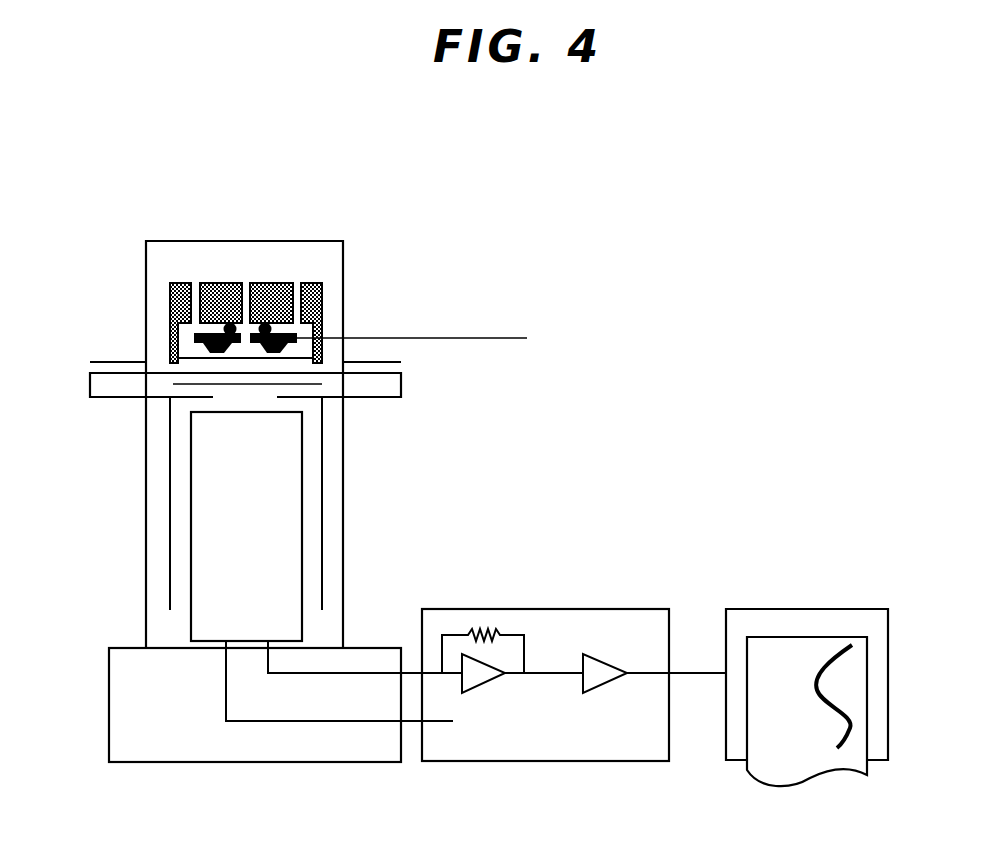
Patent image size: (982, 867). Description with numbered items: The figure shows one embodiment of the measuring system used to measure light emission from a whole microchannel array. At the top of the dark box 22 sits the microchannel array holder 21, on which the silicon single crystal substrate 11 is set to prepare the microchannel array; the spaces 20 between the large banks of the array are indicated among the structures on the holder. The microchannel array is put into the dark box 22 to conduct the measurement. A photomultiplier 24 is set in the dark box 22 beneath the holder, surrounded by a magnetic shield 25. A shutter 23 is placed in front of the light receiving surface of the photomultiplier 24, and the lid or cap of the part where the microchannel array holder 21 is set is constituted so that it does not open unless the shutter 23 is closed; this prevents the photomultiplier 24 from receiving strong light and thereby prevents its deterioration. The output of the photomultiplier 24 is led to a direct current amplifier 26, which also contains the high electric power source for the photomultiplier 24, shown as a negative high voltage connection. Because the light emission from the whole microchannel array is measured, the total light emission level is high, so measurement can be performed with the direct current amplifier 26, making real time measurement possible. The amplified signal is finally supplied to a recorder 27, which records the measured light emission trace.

The silicon single crystal substrate 11 is at (430, 336).
The spaces 20 is at (258, 349).
The microchannel array holder 21 is at (323, 295).
The dark box 22 is at (260, 240).
The shutter 23 is at (322, 384).
The photomultiplier 24 is at (303, 466).
The magnetic shield 25 is at (323, 527).
The direct current amplifier 26 is at (553, 608).
The recorder 27 is at (805, 608).